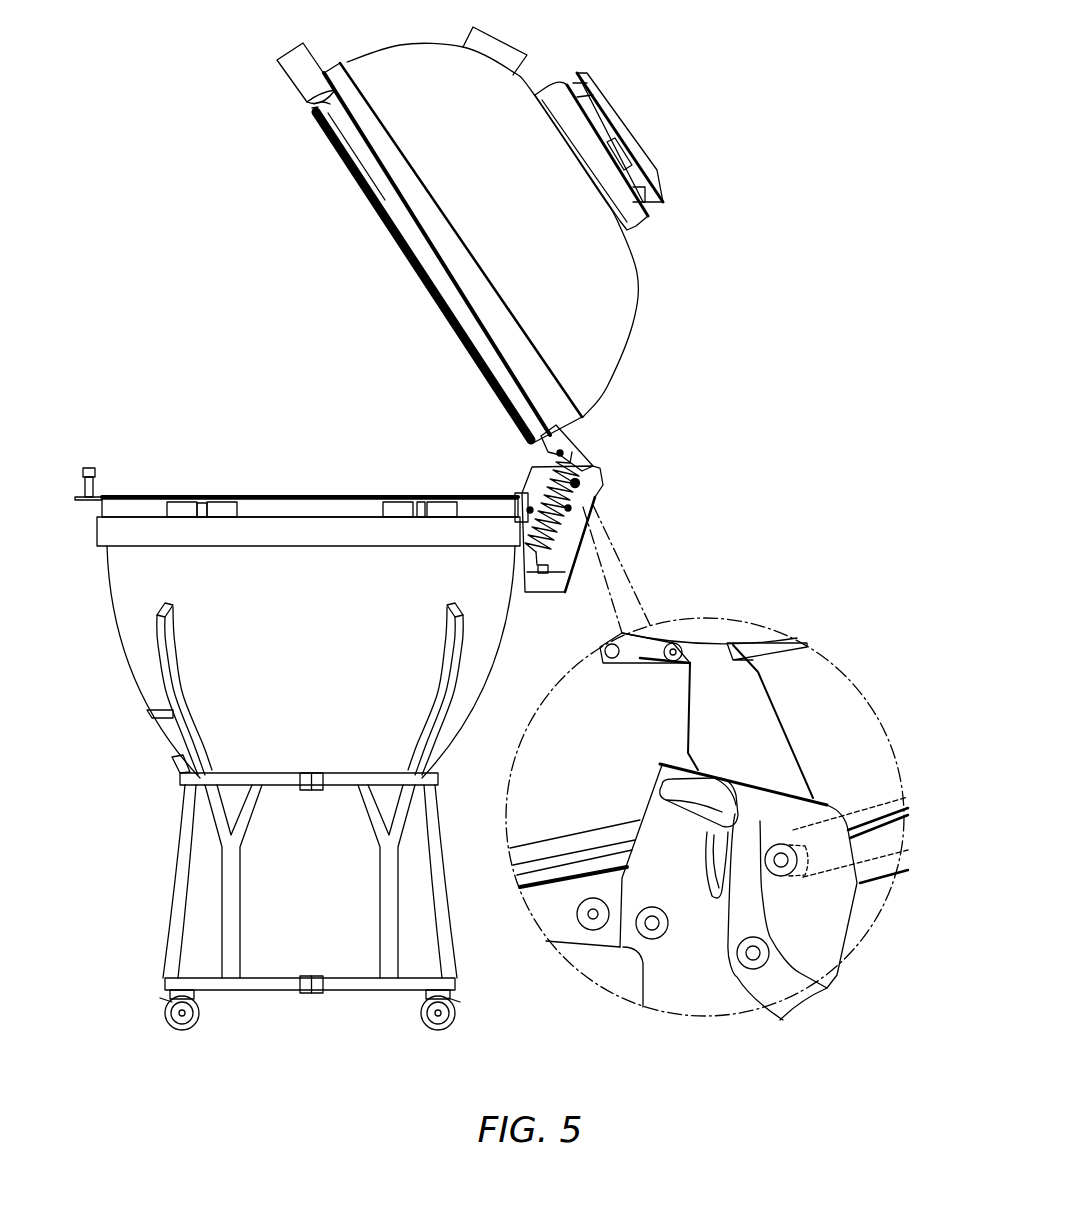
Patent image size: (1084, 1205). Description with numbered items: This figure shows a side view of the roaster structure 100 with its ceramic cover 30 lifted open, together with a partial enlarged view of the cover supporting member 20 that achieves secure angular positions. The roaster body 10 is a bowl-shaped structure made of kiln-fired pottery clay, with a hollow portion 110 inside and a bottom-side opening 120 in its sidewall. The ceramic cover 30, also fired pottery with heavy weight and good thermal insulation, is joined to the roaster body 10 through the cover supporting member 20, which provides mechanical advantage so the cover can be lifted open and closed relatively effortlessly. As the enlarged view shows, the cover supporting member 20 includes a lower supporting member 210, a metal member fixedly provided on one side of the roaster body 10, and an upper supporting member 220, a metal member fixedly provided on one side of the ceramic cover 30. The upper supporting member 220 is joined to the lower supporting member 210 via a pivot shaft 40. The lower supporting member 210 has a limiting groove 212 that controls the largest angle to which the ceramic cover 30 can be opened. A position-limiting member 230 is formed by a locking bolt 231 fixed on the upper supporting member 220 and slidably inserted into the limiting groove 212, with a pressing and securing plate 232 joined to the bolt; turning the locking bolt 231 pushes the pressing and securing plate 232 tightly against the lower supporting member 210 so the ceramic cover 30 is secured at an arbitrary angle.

The roaster structure 100 is at (715, 51).
The roaster body 10 is at (118, 597).
The hollow portion 110 is at (262, 470).
The bottom-side opening 120 is at (165, 739).
The cover supporting member 20 is at (598, 500).
The ceramic cover 30 is at (624, 272).
The pivot shaft 40 is at (577, 478).
The lower supporting member 210 is at (687, 1010).
The limiting groove 212 is at (694, 859).
The upper supporting member 220 is at (707, 702).
The position-limiting member 230 is at (902, 975).
The locking bolt 231 is at (746, 985).
The pressing and securing plate 232 is at (728, 821).